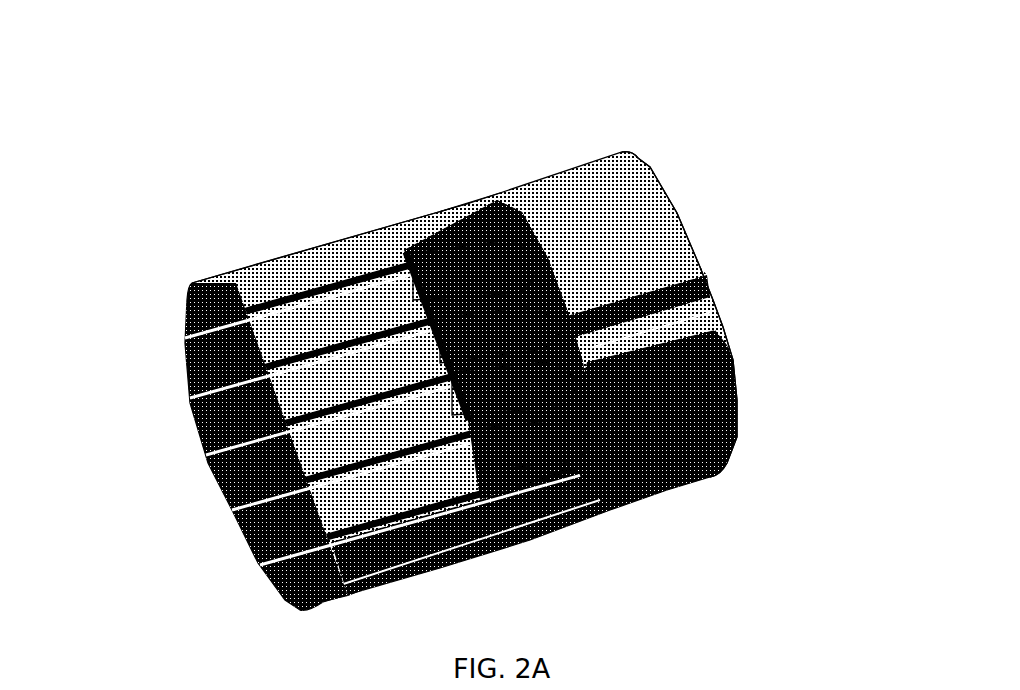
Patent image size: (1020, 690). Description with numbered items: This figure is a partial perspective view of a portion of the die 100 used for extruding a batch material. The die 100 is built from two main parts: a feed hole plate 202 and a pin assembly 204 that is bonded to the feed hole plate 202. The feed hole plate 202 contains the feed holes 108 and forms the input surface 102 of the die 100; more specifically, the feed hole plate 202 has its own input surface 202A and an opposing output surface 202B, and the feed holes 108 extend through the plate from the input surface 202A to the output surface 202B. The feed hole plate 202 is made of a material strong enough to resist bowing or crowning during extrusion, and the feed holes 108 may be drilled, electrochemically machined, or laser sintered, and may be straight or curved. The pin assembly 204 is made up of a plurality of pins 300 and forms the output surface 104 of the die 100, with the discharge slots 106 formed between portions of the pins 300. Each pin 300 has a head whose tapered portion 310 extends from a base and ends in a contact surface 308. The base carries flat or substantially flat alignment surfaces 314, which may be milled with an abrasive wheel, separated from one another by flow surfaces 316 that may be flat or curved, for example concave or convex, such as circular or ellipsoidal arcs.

The die 100 is at (753, 562).
The input surface 102 is at (740, 281).
The output surface 104 is at (187, 430).
The discharge slots 106 is at (235, 515).
The feed holes 108 is at (697, 310).
The feed hole plate 202 is at (588, 175).
The input surface 202A is at (723, 195).
The output surface 202B is at (467, 158).
The pin assembly 204 is at (188, 277).
The pins 300 is at (409, 442).
The contact surface 308 is at (577, 382).
The tapered portion 310 is at (577, 445).
The alignment surfaces 314 is at (538, 455).
The flow surfaces 316 is at (493, 430).